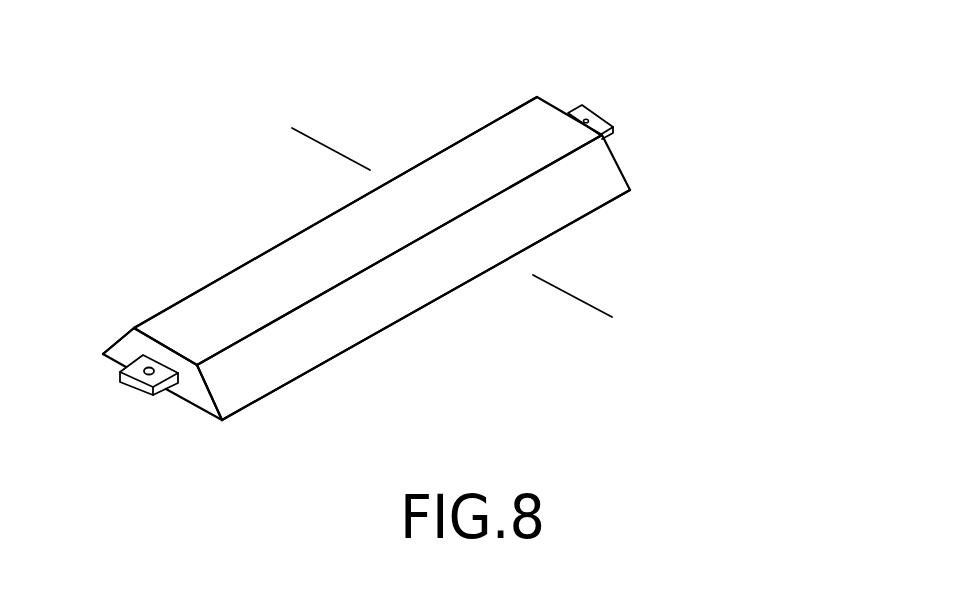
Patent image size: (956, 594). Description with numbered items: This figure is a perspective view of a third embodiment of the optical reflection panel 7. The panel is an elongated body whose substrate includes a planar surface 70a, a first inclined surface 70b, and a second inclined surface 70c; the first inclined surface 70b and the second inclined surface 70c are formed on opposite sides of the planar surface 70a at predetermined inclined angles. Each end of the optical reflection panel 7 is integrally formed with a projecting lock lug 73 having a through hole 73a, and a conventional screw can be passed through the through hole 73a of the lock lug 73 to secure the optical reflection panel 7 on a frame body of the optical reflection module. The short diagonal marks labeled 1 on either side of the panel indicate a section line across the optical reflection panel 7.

The optical reflection panel 7 is at (465, 92).
The planar surface 70a is at (257, 280).
The first inclined surface 70b is at (122, 336).
The second inclined surface 70c is at (225, 392).
The lock lug 73 is at (133, 388).
The through hole 73a is at (590, 120).
The section line 1 is at (335, 146).